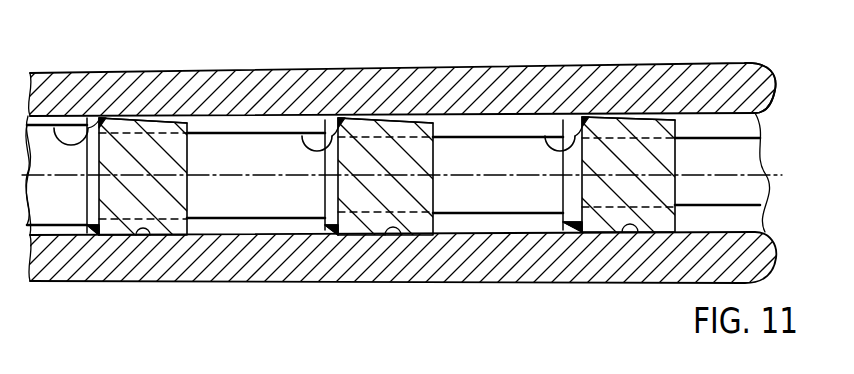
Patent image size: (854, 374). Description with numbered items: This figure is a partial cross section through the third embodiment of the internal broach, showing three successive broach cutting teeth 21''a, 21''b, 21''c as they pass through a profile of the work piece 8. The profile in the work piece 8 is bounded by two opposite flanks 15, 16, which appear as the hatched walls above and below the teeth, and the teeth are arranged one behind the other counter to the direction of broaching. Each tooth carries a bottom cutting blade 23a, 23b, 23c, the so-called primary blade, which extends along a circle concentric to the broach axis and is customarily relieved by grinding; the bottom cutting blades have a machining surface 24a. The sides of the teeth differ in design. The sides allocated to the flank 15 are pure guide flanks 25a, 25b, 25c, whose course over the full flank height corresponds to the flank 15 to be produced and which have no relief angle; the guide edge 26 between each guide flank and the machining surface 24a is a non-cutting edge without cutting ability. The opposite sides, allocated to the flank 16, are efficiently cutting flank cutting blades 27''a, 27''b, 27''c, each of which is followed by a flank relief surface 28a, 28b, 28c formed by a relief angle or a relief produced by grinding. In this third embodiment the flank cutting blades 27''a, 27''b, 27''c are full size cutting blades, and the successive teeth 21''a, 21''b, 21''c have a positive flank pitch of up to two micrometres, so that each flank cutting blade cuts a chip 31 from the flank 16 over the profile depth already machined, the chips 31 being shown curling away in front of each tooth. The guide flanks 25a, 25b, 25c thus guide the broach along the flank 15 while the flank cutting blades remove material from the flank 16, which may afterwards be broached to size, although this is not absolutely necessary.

The work piece 8 is at (727, 72).
The flank 15 is at (237, 238).
The flank 16 is at (258, 103).
The broach cutting tooth 21''a is at (163, 176).
The broach cutting tooth 21''b is at (392, 176).
The broach cutting tooth 21''c is at (636, 176).
The bottom cutting blade 23a is at (87, 198).
The bottom cutting blade 23b is at (325, 192).
The bottom cutting blade 23c is at (563, 190).
The machining surface 24a is at (563, 164).
The guide flank 25a is at (150, 237).
The guide flank 25b is at (400, 236).
The guide flank 25c is at (637, 234).
The guide edge 26 is at (78, 236).
The flank cutting blade 27''a is at (80, 72).
The flank cutting blade 27''b is at (338, 72).
The flank cutting blade 27''c is at (568, 71).
The flank relief surface 28a is at (170, 118).
The flank relief surface 28b is at (408, 118).
The flank relief surface 28c is at (648, 118).
The chip 31 is at (60, 146).